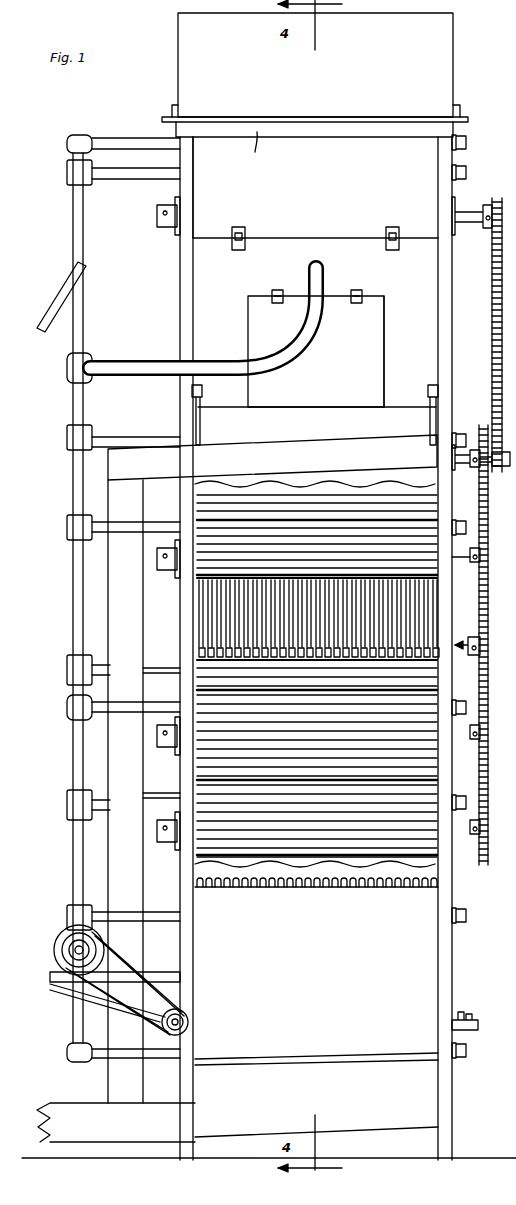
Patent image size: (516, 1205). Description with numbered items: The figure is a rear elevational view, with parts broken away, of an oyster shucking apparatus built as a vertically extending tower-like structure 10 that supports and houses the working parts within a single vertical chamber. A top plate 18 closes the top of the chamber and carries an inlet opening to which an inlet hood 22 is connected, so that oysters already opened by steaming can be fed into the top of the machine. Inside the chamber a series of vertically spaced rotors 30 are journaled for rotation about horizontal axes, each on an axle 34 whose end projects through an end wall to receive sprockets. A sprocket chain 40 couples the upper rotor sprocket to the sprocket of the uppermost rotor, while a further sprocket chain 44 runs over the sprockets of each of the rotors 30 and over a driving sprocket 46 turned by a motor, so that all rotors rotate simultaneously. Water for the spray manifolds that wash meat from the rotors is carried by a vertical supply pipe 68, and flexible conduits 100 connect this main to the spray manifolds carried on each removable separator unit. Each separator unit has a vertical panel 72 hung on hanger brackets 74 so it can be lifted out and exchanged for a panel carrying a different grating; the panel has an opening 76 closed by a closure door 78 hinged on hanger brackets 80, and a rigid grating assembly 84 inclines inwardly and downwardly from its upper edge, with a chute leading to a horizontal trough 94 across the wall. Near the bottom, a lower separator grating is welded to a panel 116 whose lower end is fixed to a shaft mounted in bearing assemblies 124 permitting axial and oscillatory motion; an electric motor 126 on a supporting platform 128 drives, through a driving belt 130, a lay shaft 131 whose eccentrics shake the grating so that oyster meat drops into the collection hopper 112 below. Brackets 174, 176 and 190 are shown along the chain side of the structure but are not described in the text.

The tower-like structure 10 is at (460, 70).
The top plate 18 is at (248, 151).
The inlet hood 22 is at (432, 42).
The rotors 30 is at (205, 532).
The axle 34 is at (465, 210).
The sprocket chain 40 is at (493, 278).
The sprocket chain 44 is at (488, 520).
The driving sprocket 46 is at (470, 637).
The vertical supply pipe 68 is at (73, 568).
The vertical panel 72 is at (207, 270).
The hanger brackets 74 is at (243, 235).
The opening 76 is at (386, 357).
The closure door 78 is at (367, 330).
The hanger brackets 80 is at (357, 290).
The grating assembly 84 is at (250, 603).
The trough 94 is at (327, 458).
The flexible conduit 100 is at (300, 338).
The collection hopper 112 is at (420, 1103).
The panel 116 is at (418, 988).
The bearing assemblies 124 is at (468, 1030).
The electric motor 126 is at (72, 945).
The supporting platform 128 is at (60, 985).
The driving belt 130 is at (140, 975).
The lay shaft 131 is at (188, 1022).
The bracket 174 is at (493, 557).
The bracket 176 is at (493, 678).
The bracket 190 is at (493, 755).